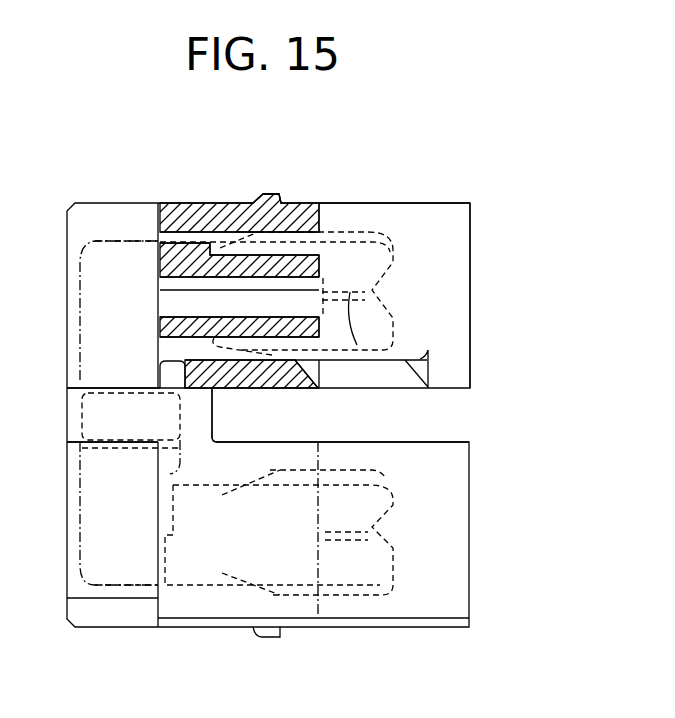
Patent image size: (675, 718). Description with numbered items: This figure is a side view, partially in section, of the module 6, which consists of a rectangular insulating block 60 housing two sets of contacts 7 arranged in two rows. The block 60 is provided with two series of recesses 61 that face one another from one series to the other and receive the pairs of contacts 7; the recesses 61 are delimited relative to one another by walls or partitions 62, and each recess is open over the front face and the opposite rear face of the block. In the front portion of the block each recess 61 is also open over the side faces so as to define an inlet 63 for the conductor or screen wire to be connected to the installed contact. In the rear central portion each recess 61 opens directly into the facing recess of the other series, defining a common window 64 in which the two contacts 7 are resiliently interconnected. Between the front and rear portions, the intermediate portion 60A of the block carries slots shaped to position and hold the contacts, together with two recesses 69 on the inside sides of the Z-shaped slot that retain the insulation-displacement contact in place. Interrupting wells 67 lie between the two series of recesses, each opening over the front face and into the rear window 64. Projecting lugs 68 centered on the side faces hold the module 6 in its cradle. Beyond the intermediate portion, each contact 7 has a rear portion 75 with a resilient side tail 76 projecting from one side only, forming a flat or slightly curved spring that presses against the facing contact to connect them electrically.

The module 6 is at (422, 188).
The contacts 7 is at (98, 238).
The block 60 is at (287, 200).
The intermediate portion of the block 60A is at (188, 205).
The recesses 61 is at (418, 290).
The walls or partitions 62 is at (470, 218).
The inlet 63 is at (362, 213).
The common window 64 is at (72, 410).
The interrupting wells 67 is at (413, 415).
The projecting lugs 68 is at (258, 193).
The recesses in intermediate portion 69 is at (216, 246).
The rear portion of the contact 75 is at (95, 293).
The resilient side tail 76 is at (112, 395).